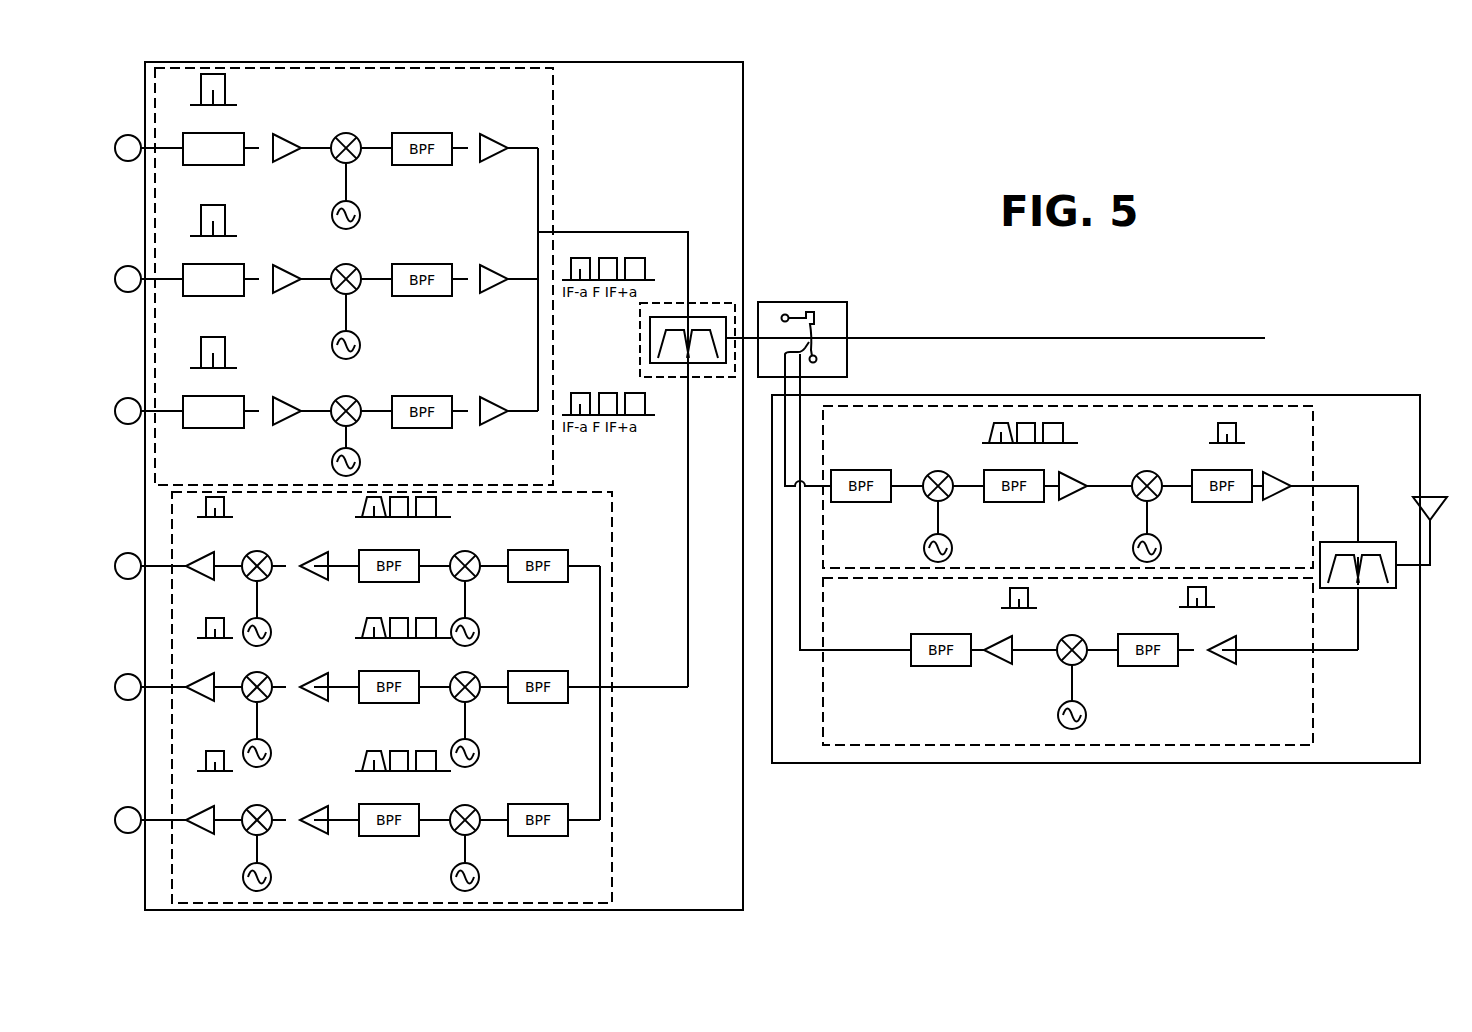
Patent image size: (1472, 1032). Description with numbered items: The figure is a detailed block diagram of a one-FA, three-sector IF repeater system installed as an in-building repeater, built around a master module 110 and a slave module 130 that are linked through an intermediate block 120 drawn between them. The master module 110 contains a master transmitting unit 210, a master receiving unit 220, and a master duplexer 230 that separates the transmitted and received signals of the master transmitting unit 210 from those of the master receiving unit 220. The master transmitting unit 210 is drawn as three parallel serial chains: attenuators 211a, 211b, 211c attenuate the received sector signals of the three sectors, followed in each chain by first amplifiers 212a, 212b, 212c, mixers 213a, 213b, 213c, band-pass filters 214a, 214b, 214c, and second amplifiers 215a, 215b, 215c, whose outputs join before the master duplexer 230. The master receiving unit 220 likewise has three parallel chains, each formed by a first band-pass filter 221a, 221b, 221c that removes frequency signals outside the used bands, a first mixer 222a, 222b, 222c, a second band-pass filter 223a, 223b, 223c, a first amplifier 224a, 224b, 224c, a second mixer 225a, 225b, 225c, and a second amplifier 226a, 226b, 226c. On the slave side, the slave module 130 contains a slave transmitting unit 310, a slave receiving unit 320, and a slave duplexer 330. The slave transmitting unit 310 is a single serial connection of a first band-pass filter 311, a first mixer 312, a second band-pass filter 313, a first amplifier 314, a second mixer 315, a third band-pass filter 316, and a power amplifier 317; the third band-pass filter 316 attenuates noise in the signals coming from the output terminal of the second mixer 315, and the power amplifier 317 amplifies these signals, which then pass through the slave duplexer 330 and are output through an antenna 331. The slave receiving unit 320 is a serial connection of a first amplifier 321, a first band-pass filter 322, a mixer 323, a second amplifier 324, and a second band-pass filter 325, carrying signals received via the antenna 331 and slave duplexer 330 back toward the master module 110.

The master module 110 is at (743, 157).
The switch 120 is at (828, 283).
The slave module 130 is at (1180, 395).
The master transmitting unit 210 is at (553, 125).
The master receiving unit 220 is at (612, 558).
The master duplexer 230 is at (700, 303).
The attenuator 211a is at (238, 133).
The attenuator 211b is at (238, 264).
The attenuator 211c is at (238, 396).
The first amplifier 212a is at (290, 134).
The first amplifier 212b is at (290, 265).
The first amplifier 212c is at (290, 397).
The mixer 213a is at (352, 133).
The mixer 213b is at (352, 264).
The mixer 213c is at (352, 396).
The band-pass filter 214a is at (410, 133).
The band-pass filter 214b is at (410, 264).
The band-pass filter 214c is at (410, 396).
The second amplifier 215a is at (496, 134).
The second amplifier 215b is at (496, 265).
The second amplifier 215c is at (496, 397).
The first band-pass filter 221a is at (528, 550).
The first band-pass filter 221b is at (528, 671).
The first band-pass filter 221c is at (528, 804).
The first mixer 222a is at (470, 551).
The first mixer 222b is at (470, 672).
The first mixer 222c is at (470, 805).
The second band-pass filter 223a is at (400, 582).
The second band-pass filter 223b is at (400, 703).
The second band-pass filter 223c is at (400, 836).
The first amplifier 224a is at (318, 552).
The first amplifier 224b is at (318, 673).
The first amplifier 224c is at (318, 806).
The second mixer 225a is at (262, 551).
The second mixer 225b is at (262, 672).
The second mixer 225c is at (262, 805).
The second amplifier 226a is at (189, 558).
The second amplifier 226b is at (189, 679).
The second amplifier 226c is at (189, 812).
The slave transmitting unit 310 is at (1232, 406).
The first band-pass filter 311 is at (872, 470).
The first mixer 312 is at (943, 471).
The second band-pass filter 313 is at (1042, 518).
The first amplifier 314 is at (1078, 472).
The second mixer 315 is at (1150, 471).
The third band-pass filter 316 is at (1247, 518).
The power amplifier 317 is at (1282, 472).
The slave receiving unit 320 is at (1068, 661).
The first amplifier 321 is at (1238, 680).
The first band-pass filter 322 is at (1132, 666).
The mixer 323 is at (1076, 635).
The second amplifier 324 is at (1012, 664).
The second band-pass filter 325 is at (925, 634).
The slave duplexer 330 is at (1375, 542).
The antenna 331 is at (1445, 545).